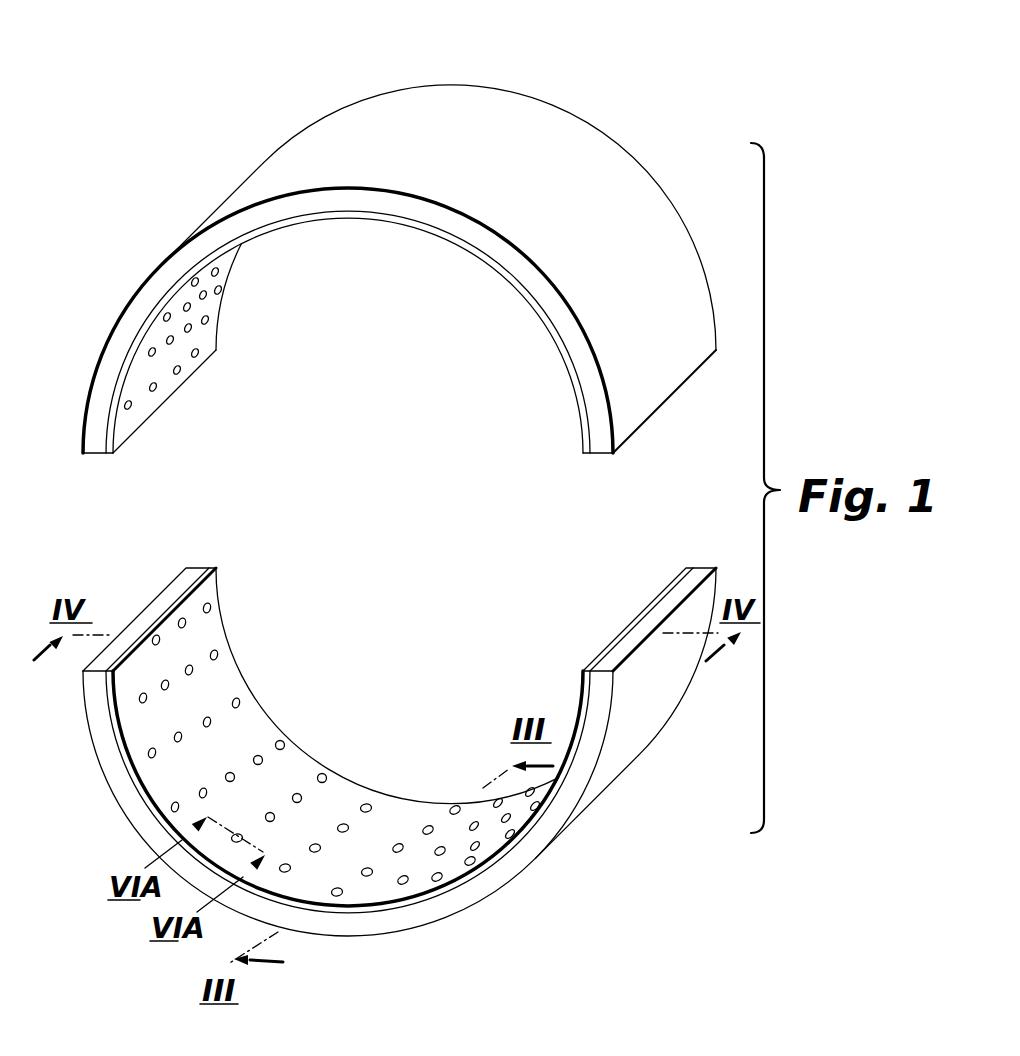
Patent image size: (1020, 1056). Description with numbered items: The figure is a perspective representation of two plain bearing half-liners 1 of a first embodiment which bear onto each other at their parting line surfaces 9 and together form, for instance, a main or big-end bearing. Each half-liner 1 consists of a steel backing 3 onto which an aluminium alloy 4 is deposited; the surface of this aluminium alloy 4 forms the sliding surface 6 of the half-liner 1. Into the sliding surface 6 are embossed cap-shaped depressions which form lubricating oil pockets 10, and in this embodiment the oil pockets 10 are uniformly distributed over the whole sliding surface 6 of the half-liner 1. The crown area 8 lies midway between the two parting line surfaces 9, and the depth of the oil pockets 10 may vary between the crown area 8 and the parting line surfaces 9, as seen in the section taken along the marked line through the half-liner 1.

The plain bearing half-liner 1 is at (632, 102).
The steel backing 3 is at (648, 185).
The aluminium alloy 4 is at (582, 425).
The sliding surface 6 is at (147, 405).
The crown area 8 is at (477, 97).
The parting line surfaces 9 is at (97, 467).
The lubricating oil pockets 10 is at (178, 372).